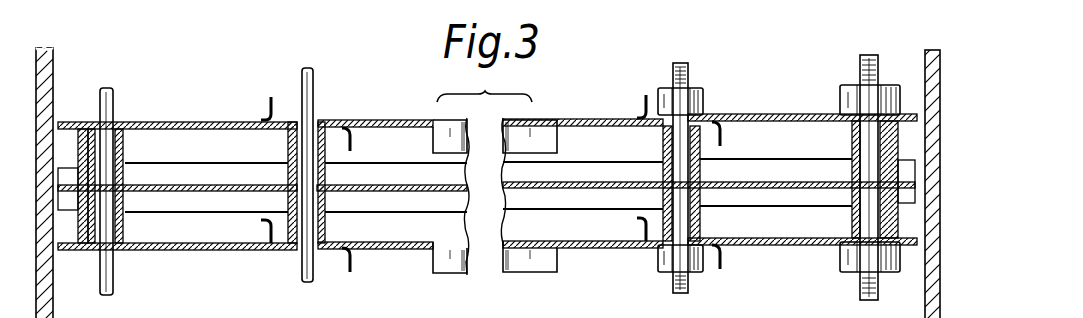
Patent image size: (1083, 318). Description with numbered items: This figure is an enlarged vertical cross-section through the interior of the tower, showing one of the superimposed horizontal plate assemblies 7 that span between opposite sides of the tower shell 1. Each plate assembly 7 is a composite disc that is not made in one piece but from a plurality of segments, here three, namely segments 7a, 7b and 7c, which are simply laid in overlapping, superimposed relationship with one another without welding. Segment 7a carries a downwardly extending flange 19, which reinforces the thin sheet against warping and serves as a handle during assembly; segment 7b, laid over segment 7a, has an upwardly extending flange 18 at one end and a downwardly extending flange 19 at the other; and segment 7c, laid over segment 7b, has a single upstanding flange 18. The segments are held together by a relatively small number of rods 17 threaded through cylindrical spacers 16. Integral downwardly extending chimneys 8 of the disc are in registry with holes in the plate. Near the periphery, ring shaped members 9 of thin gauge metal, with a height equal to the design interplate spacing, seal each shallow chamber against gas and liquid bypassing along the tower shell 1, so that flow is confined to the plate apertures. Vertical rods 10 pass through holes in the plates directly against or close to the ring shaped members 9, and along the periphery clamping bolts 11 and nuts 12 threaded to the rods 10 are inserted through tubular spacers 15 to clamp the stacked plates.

The tower shell 1 is at (942, 64).
The horizontal plate assembly 7 is at (810, 188).
The plate segment 7a is at (203, 120).
The plate segment 7b is at (409, 119).
The plate segment 7c is at (818, 113).
The chimney 8 is at (562, 257).
The ring shaped member 9 is at (78, 150).
The vertical rod 10 is at (114, 270).
The clamping bolt 11 is at (866, 55).
The nut 12 is at (840, 93).
The tubular spacer 15 is at (126, 150).
The cylindrical spacer 16 is at (327, 223).
The rod 17 is at (300, 265).
The upwardly extending flange 18 is at (262, 117).
The downwardly extending flange 19 is at (350, 128).